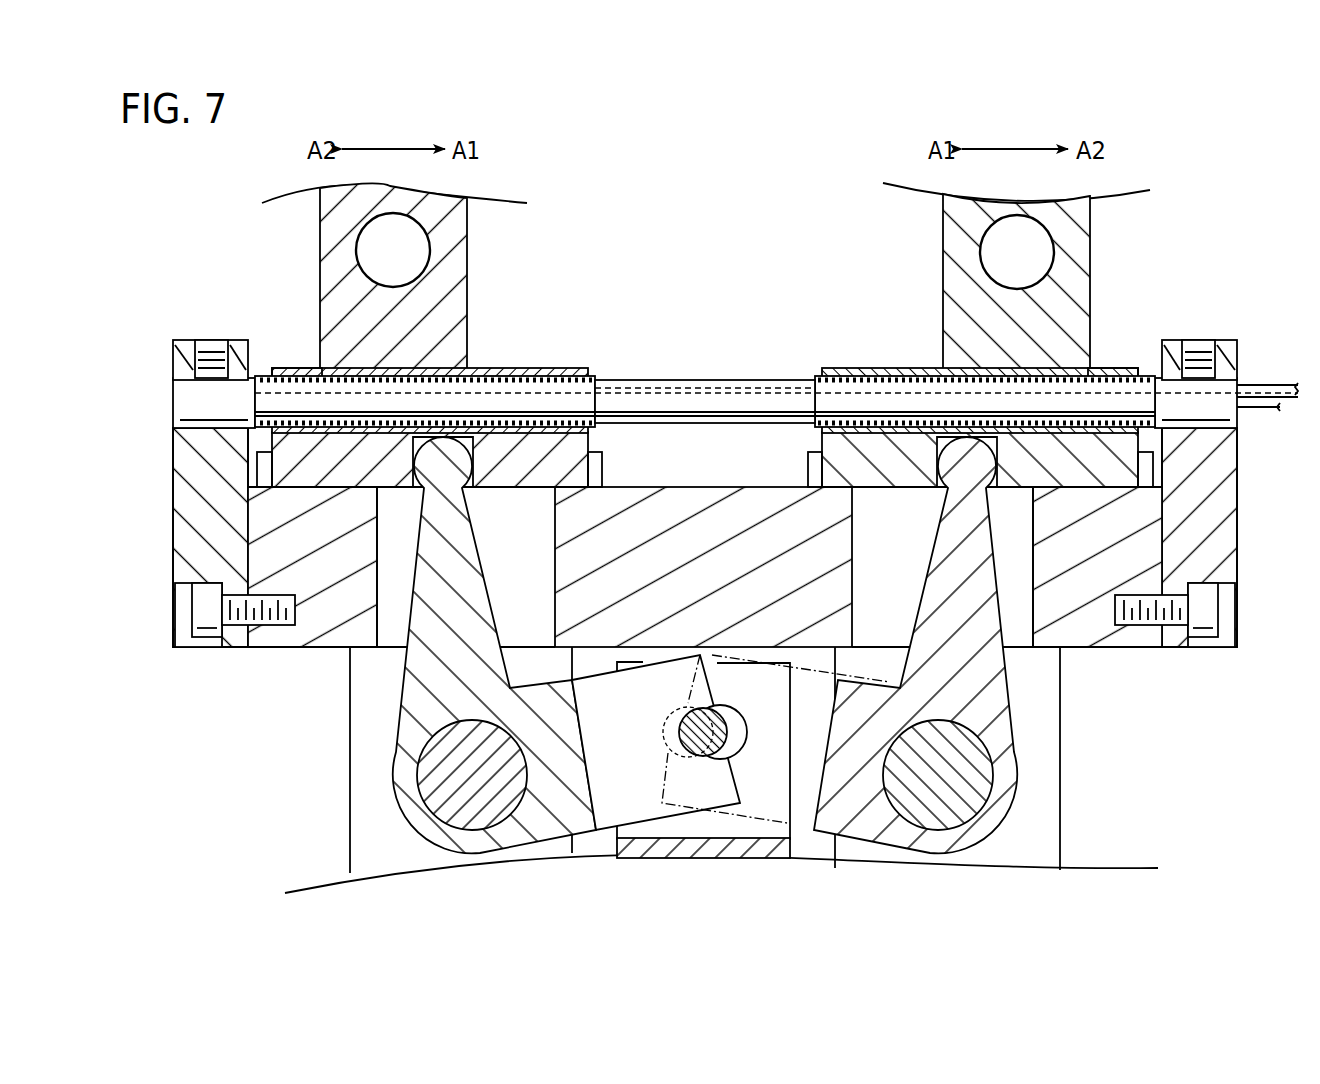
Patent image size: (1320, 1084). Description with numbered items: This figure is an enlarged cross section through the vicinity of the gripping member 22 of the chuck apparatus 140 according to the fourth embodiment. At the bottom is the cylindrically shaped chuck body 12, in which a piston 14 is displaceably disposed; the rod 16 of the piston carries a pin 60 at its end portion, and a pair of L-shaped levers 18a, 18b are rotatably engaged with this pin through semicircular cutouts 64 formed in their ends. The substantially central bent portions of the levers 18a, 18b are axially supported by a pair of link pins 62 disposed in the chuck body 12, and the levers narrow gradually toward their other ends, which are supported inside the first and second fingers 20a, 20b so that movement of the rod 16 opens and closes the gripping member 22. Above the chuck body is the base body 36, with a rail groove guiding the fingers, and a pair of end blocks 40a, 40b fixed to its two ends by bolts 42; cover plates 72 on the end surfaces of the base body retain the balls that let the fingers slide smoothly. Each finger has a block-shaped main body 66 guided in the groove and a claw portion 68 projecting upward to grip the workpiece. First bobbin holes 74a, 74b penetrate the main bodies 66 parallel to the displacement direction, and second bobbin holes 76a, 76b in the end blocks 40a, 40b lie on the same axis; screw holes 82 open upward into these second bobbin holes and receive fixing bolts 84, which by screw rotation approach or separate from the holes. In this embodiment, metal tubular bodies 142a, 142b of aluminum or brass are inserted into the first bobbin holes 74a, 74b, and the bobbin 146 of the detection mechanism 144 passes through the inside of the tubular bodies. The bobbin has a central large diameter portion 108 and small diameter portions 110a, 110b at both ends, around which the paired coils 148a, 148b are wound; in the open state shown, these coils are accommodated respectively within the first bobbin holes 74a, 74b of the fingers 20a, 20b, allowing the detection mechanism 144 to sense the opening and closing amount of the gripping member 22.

The chuck body 12 is at (1063, 725).
The piston 14 is at (676, 852).
The rod 16 is at (745, 845).
The lever 18a is at (420, 815).
The lever 18b is at (990, 815).
The first finger 20a is at (648, 276).
The second finger 20b is at (1092, 238).
The gripping member 22 is at (492, 242).
The base body 36 is at (1133, 642).
The end block 40a is at (187, 527).
The end block 40b is at (1225, 527).
The bolt 42 is at (205, 614).
The pin 60 is at (690, 738).
The link pin 62 is at (448, 772).
The cutout 64 is at (735, 728).
The main body 66 is at (505, 466).
The claw portion 68 is at (458, 268).
The cover plate 72 is at (262, 462).
The first bobbin hole 74a is at (463, 366).
The first bobbin hole 74b is at (945, 366).
The second bobbin hole 76a is at (175, 390).
The second bobbin hole 76b is at (1238, 392).
The screw hole 82 is at (200, 345).
The fixing bolt 84 is at (210, 342).
The large diameter portion 108 is at (700, 405).
The small diameter portion 110a is at (285, 398).
The small diameter portion 110b is at (1120, 415).
The chuck apparatus 140 is at (1272, 197).
The tubular body 142a is at (598, 378).
The tubular body 142b is at (812, 378).
The detection mechanism 144 is at (682, 306).
The bobbin 146 is at (684, 378).
The coil 148a is at (553, 368).
The coil 148b is at (855, 368).